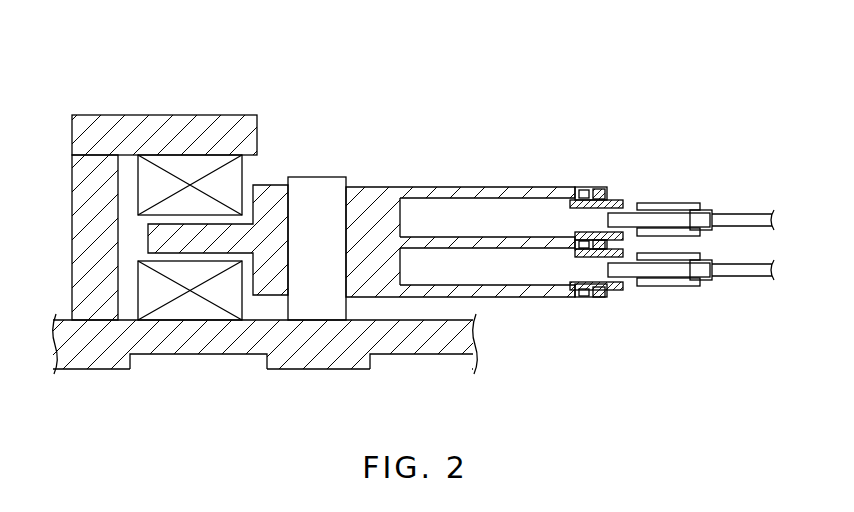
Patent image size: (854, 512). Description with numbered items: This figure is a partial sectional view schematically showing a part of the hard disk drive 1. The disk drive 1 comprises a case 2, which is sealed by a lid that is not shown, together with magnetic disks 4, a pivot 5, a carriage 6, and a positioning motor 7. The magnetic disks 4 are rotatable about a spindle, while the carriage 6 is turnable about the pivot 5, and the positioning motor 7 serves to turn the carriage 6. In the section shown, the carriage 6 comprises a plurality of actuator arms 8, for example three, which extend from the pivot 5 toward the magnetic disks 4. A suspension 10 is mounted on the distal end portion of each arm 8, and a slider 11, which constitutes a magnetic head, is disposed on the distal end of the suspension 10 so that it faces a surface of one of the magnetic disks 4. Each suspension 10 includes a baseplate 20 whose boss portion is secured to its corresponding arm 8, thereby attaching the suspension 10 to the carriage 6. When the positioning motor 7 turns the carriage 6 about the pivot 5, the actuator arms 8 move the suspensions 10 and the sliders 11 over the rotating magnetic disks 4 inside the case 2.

The disk drive 1 is at (208, 78).
The case 2 is at (103, 371).
The magnetic disks 4 is at (752, 216).
The pivot 5 is at (319, 186).
The carriage 6 is at (448, 187).
The positioning motor 7 is at (186, 316).
The actuator arms 8 is at (540, 186).
The suspension 10 is at (683, 229).
The slider 11 is at (705, 209).
The baseplate 20 is at (605, 190).